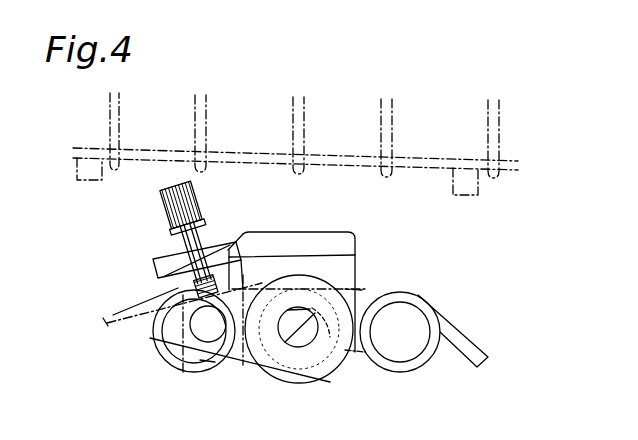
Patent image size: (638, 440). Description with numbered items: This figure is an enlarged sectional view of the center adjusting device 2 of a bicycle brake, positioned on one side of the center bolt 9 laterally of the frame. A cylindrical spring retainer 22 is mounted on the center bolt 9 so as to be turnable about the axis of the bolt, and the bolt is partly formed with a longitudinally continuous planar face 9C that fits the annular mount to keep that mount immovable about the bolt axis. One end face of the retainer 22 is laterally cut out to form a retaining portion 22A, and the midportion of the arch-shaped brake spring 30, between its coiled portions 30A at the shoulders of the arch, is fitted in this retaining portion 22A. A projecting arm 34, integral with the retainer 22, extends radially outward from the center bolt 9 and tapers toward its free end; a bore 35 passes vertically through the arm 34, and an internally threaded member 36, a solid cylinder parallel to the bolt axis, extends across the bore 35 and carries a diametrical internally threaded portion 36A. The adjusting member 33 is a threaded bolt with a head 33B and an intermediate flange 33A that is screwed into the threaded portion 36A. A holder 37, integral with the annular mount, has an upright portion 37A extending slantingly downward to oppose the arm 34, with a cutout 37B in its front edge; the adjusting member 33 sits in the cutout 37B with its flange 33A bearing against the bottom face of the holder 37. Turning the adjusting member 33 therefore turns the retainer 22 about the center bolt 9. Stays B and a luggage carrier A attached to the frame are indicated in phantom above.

The luggage carrier A is at (500, 118).
The stays B is at (72, 180).
The center adjusting device 2 is at (206, 220).
The center bolt 9 is at (297, 346).
The planar face 9C is at (330, 318).
The spring retainer 22 is at (333, 372).
The retaining portion 22A is at (335, 286).
The brake spring 30 is at (476, 328).
The coiled portions 30A is at (192, 373).
The adjusting member 33 is at (160, 234).
The flange 33A is at (192, 283).
The head 33B is at (166, 197).
The projecting arm 34 is at (245, 365).
The bore 35 is at (160, 340).
The internally threaded member 36 is at (216, 345).
The internally threaded portion 36A is at (200, 360).
The holder 37 is at (157, 268).
The upright portion 37A is at (327, 270).
The cutout 37B is at (209, 252).